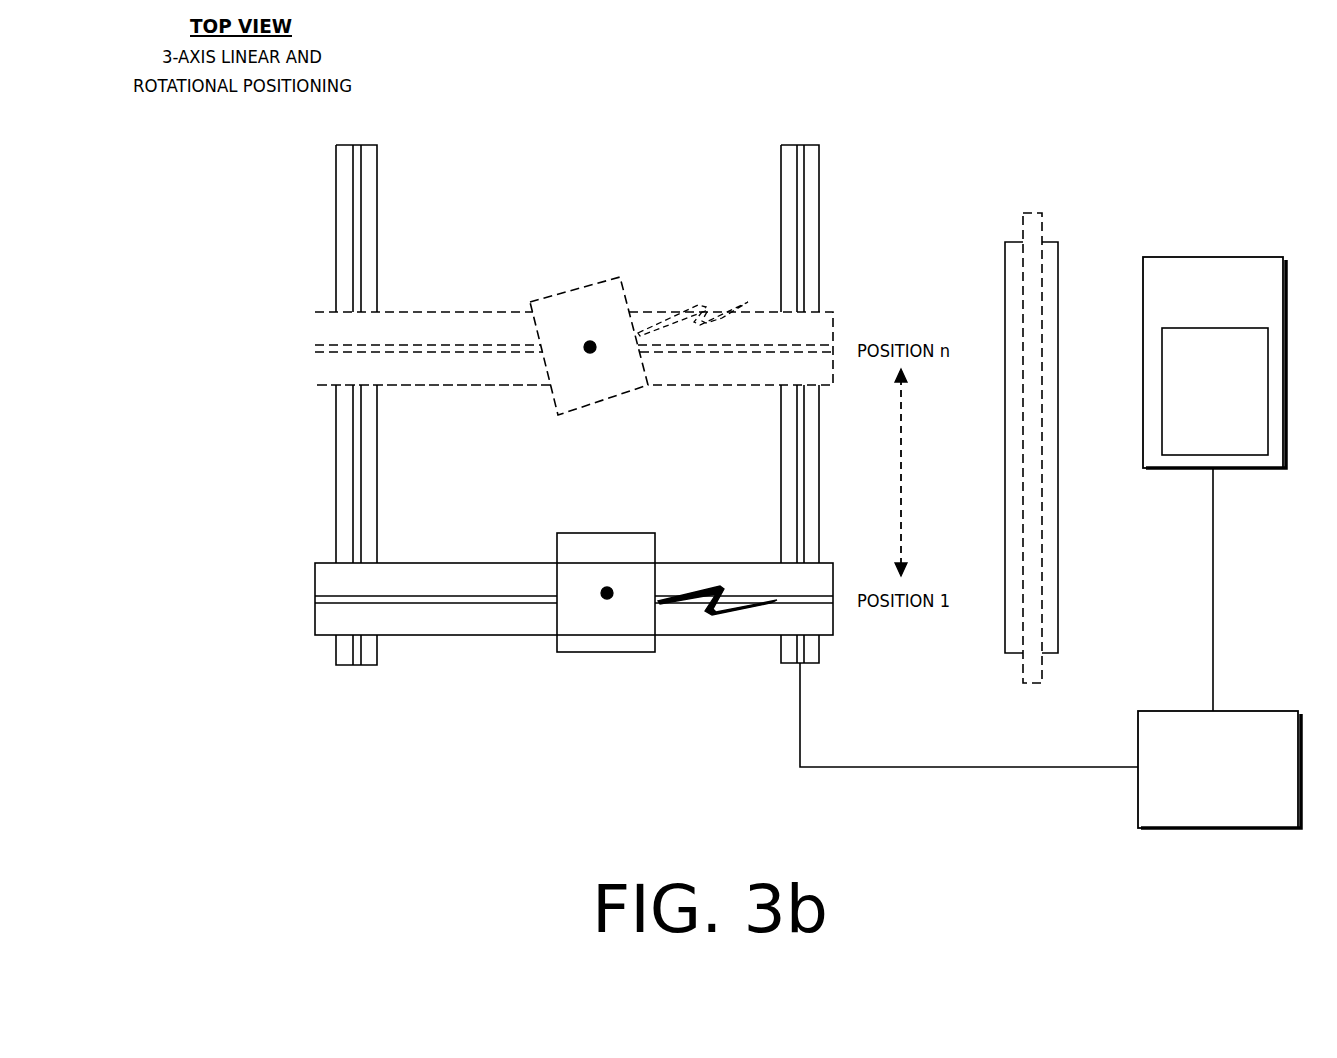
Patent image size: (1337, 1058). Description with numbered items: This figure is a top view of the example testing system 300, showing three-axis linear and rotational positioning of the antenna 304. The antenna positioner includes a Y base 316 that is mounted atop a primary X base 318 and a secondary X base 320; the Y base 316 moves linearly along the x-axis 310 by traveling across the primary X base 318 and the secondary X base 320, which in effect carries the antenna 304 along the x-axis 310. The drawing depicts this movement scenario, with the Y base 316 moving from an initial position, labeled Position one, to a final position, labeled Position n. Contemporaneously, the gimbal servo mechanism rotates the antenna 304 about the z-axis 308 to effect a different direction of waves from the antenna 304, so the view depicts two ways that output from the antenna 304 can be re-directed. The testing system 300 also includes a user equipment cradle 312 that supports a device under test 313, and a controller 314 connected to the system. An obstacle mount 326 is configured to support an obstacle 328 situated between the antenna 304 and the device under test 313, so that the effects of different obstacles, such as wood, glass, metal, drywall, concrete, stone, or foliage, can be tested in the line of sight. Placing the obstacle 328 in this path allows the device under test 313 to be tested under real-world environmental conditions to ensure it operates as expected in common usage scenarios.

The testing system 300 is at (932, 129).
The antenna 304 is at (570, 652).
The z-axis 308 is at (590, 347).
The x-axis 310 is at (427, 547).
The user equipment (UE) cradle 312 is at (1232, 315).
The device under test (DUT) 313 is at (1232, 444).
The controller 314 is at (1238, 796).
The Y base 316 is at (315, 597).
The primary X base 318 is at (333, 665).
The secondary X base 320 is at (780, 650).
The obstacle mount 326 is at (1005, 653).
The obstacle 328 is at (1023, 678).